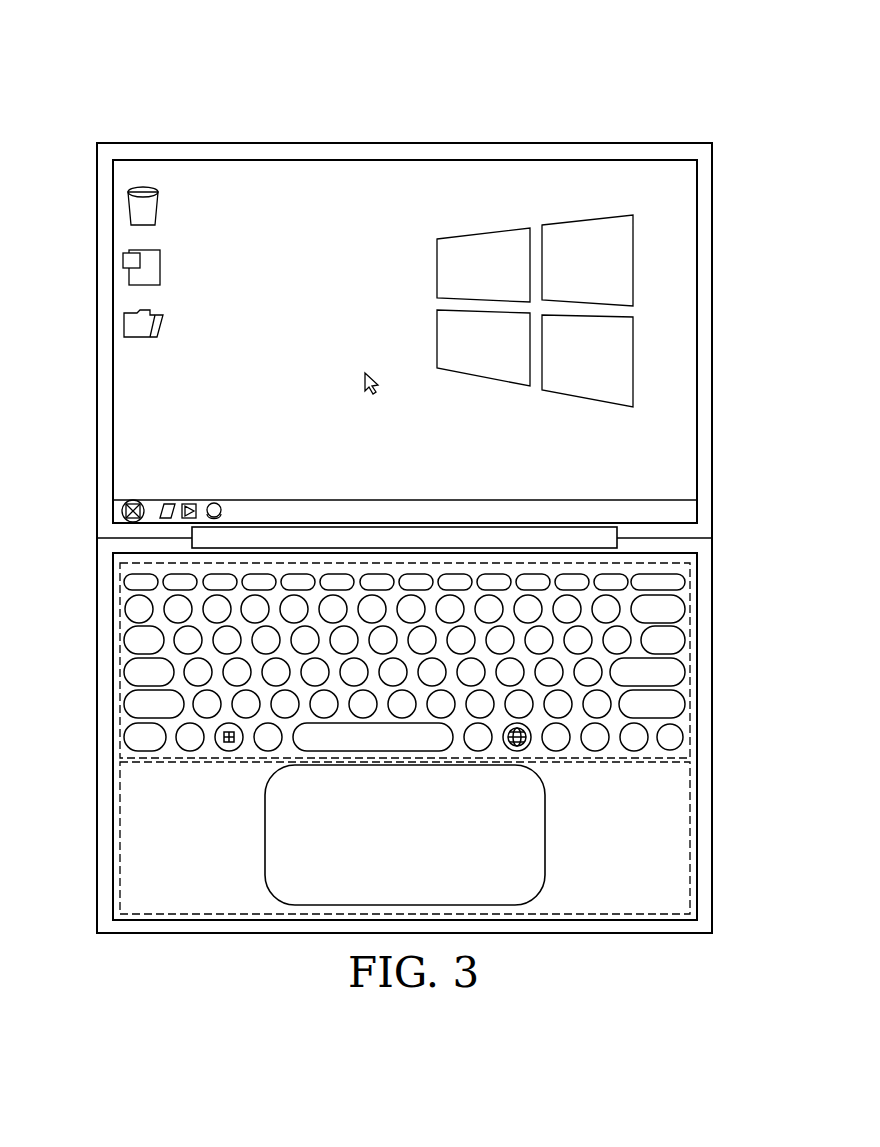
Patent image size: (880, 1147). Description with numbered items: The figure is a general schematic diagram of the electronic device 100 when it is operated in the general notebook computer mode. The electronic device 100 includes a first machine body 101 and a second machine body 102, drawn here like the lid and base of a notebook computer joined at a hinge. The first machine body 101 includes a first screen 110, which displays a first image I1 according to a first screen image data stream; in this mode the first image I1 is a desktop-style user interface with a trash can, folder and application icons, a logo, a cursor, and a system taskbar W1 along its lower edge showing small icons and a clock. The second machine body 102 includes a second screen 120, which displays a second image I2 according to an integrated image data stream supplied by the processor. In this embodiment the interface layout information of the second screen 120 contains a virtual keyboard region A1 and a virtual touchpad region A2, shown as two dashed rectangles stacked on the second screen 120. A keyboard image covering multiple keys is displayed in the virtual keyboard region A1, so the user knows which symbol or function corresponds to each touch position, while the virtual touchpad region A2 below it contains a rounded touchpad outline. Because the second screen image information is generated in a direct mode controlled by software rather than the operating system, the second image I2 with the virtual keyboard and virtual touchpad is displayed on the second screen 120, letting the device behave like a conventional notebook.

The electronic device 100 is at (63, 73).
The first machine body 101 is at (712, 295).
The first screen 110 is at (697, 335).
The first image I1 is at (106, 175).
The system taskbar W1 is at (236, 508).
The second machine body 102 is at (712, 735).
The second screen 120 is at (697, 773).
The second image I2 is at (106, 588).
The virtual keyboard region A1 is at (690, 650).
The virtual touchpad region A2 is at (690, 815).